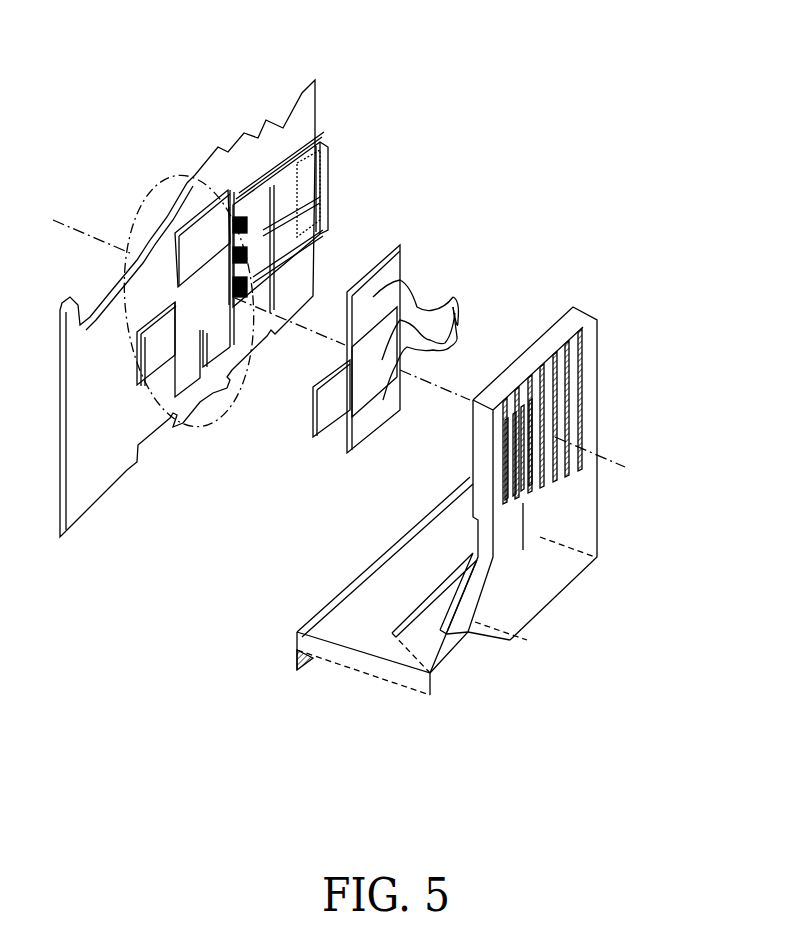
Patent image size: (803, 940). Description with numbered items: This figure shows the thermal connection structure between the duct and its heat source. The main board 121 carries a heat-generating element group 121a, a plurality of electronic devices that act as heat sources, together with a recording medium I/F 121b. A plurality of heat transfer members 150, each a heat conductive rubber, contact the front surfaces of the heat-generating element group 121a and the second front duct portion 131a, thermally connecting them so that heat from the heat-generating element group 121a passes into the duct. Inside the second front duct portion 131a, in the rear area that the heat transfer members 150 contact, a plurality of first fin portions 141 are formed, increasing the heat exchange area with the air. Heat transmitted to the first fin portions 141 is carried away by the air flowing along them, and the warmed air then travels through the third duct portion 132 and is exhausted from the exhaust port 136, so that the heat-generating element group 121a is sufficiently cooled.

The main board 121 is at (127, 480).
The heat-generating element group 121a is at (150, 200).
The recording medium I/F 121b is at (268, 187).
The heat transfer member 150 is at (405, 349).
The first fin portion 141 is at (570, 405).
The second front duct portion 131a is at (470, 473).
The third duct portion 132 is at (400, 560).
The exhaust port 136 is at (343, 673).